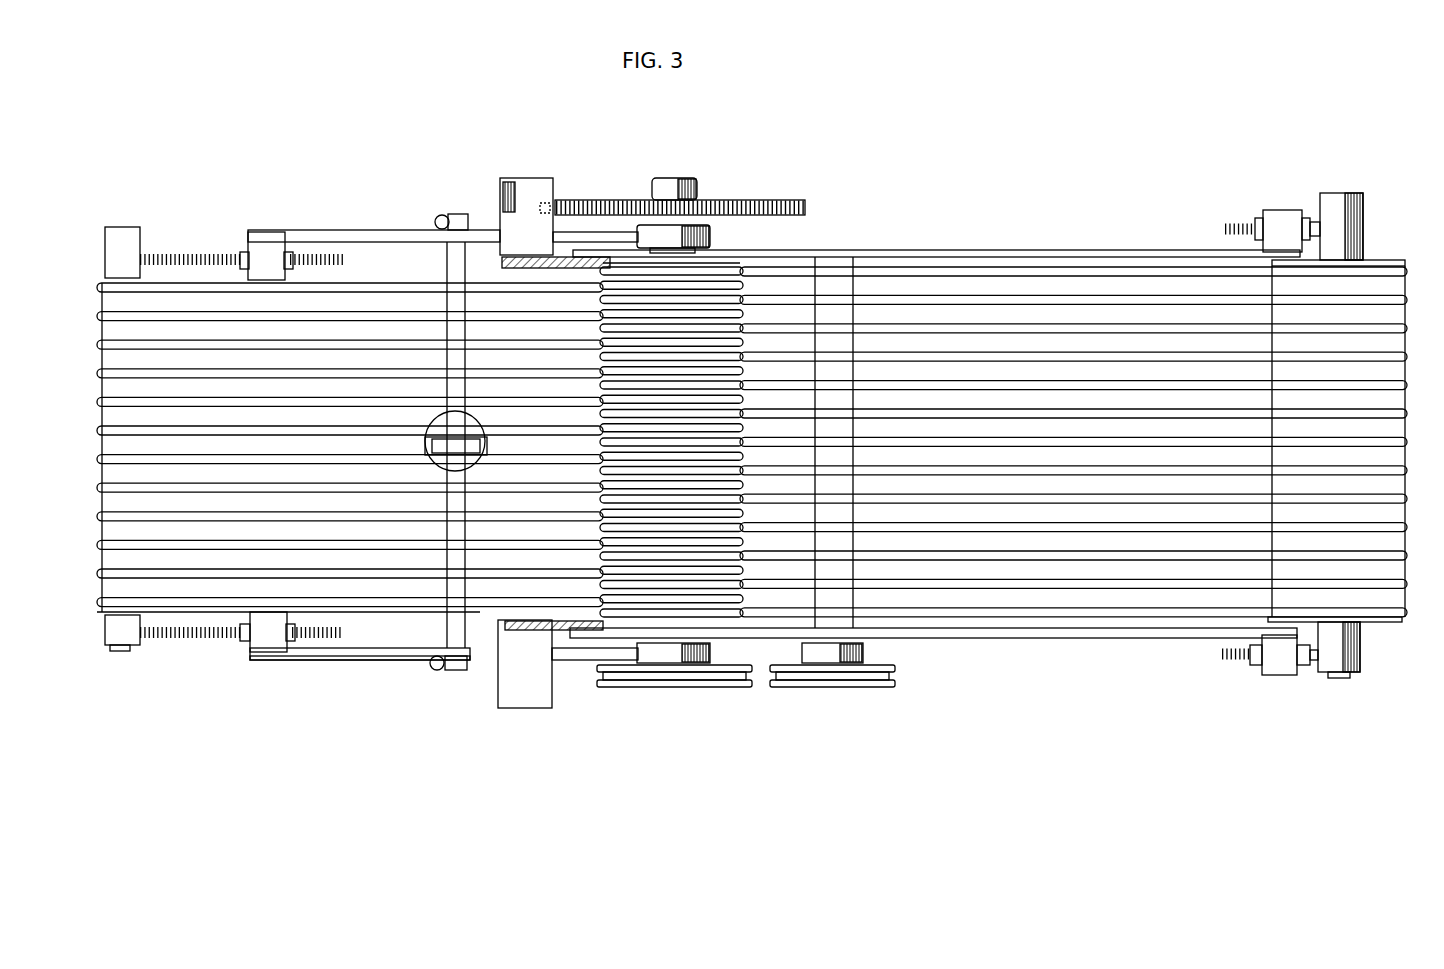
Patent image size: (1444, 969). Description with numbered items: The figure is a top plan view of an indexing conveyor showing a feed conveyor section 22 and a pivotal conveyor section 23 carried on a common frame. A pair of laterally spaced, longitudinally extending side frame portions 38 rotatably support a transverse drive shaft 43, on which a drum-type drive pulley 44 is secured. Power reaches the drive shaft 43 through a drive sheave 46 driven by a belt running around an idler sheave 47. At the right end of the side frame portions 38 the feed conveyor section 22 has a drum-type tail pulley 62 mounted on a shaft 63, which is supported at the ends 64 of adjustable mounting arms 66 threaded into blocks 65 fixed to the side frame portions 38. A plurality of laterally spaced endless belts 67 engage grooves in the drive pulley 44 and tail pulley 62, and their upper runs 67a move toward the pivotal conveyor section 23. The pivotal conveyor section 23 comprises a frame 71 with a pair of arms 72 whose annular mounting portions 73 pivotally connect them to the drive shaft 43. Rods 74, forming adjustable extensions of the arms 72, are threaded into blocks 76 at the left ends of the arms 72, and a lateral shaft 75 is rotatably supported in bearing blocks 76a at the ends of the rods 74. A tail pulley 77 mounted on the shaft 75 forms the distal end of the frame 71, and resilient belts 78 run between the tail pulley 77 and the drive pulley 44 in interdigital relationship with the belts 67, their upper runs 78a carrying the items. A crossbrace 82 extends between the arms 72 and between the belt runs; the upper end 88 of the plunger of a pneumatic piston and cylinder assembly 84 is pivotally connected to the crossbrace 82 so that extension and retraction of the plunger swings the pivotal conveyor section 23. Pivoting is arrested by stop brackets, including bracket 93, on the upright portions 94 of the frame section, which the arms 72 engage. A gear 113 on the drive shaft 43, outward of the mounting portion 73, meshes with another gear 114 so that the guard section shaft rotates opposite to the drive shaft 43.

The feed conveyor section 22 is at (1176, 222).
The pivotal conveyor section 23 is at (292, 190).
The side frame portions 38 is at (992, 250).
The drive shaft 43 is at (682, 642).
The drive pulley 44 is at (735, 262).
The drive sheave 46 is at (636, 690).
The idler sheave 47 is at (826, 690).
The tail pulley 62 is at (1382, 260).
The shaft 63 is at (1338, 680).
The ends of mounting arms 64 is at (1350, 194).
The blocks 65 is at (1276, 210).
The adjustable mounting arms 66 is at (1236, 222).
The belts 67 is at (1086, 512).
The upper runs of belts 67a is at (1104, 440).
The frame 71 is at (300, 668).
The arms 72 is at (340, 230).
The annular mounting portions 73 is at (692, 232).
The rods 74 is at (186, 252).
The shaft 75 is at (122, 652).
The blocks 76 is at (262, 244).
The bearing blocks 76a is at (108, 248).
The tail pulley 77 is at (102, 448).
The belts 78 is at (246, 426).
The upper runs of belts 78a is at (270, 487).
The crossbrace 82 is at (446, 532).
The piston and cylinder assembly 84 is at (420, 444).
The upper end of plunger 88 is at (490, 446).
The bracket 93 is at (536, 258).
The upright portions 94 is at (500, 262).
The gear 113 is at (762, 200).
The gear 114 is at (440, 216).